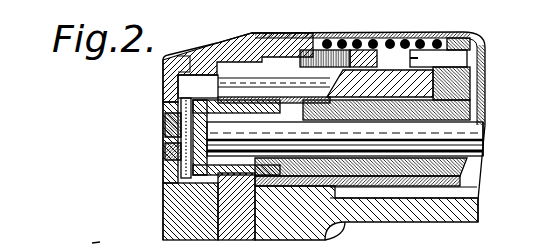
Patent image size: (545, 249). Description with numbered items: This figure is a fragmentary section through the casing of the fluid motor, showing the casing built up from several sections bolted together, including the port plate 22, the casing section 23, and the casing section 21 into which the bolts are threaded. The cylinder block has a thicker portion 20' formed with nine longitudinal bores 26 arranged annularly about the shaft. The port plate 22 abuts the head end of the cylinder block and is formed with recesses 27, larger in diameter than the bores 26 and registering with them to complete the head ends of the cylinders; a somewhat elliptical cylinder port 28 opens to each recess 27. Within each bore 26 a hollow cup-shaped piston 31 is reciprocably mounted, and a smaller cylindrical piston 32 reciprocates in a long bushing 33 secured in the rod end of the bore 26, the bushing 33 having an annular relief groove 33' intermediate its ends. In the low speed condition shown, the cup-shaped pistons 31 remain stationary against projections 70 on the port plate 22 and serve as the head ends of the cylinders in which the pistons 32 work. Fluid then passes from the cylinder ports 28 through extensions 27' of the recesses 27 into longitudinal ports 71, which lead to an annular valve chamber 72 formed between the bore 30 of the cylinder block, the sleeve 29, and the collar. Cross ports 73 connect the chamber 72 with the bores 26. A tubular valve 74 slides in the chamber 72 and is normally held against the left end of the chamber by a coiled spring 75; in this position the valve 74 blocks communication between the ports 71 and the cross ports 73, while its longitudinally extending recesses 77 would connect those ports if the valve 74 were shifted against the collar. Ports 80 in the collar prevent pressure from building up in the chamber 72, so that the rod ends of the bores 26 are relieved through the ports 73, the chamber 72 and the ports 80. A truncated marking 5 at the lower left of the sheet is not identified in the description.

The sleeve 29 is at (230, 44).
The ports 71 is at (257, 90).
The tubular valve 74 is at (306, 56).
The longitudinally extending recesses 77 is at (348, 62).
The coiled spring 75 is at (401, 45).
The annular valve chamber 72 is at (436, 50).
The ports 80 is at (456, 60).
The bore 30 is at (470, 76).
The cross ports 73 is at (380, 84).
The cylindrical pistons 32 is at (345, 137).
The annular relief grooves 33' is at (454, 137).
The bushings 33 is at (389, 139).
The thicker portion 20' is at (342, 136).
The casing section 21 is at (423, 212).
The bores 26 is at (345, 222).
The port plate 22 is at (165, 226).
The casing section 23 is at (155, 199).
The recesses 27 is at (185, 150).
The cylinder port 28 is at (180, 125).
The projections 70 is at (168, 153).
The cup-shaped pistons 31 is at (168, 178).
The extensions 27' is at (161, 89).
The base 5 is at (87, 240).